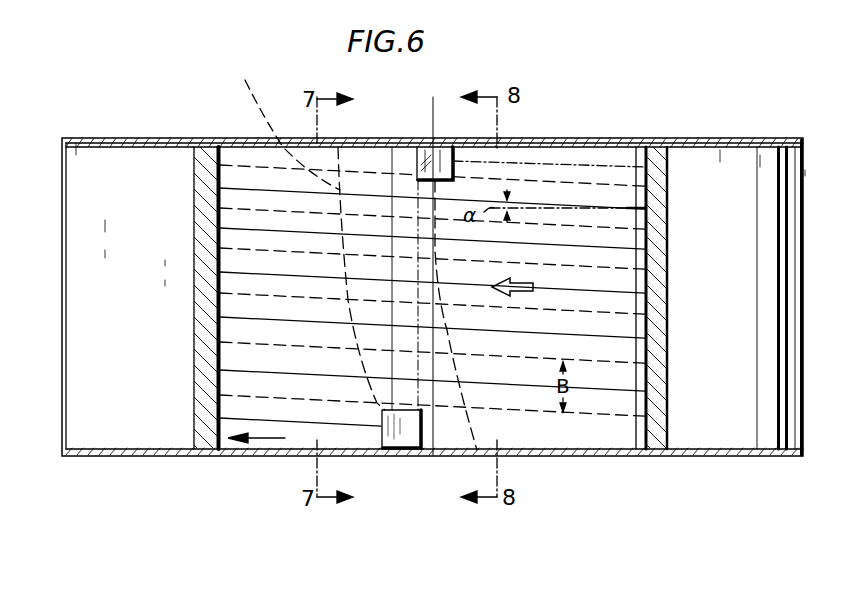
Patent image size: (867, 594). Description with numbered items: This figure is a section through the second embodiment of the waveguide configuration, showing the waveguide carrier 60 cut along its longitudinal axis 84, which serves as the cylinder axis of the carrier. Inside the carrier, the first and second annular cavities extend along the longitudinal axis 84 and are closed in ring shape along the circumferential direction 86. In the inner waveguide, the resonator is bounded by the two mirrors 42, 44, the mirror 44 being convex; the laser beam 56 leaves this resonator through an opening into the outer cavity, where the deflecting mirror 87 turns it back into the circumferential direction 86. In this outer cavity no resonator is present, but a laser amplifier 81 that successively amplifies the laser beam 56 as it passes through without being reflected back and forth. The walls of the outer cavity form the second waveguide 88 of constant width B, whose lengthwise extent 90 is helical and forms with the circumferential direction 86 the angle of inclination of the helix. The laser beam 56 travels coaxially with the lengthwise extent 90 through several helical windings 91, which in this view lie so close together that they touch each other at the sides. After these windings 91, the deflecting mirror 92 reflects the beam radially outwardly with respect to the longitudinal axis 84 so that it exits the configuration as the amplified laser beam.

The laser amplifier 81 is at (407, 120).
The mirror 44 is at (303, 232).
The deflecting mirror 92 is at (445, 148).
The laser beam 56 is at (538, 165).
The lengthwise extent 90 is at (572, 203).
The second waveguide 88 is at (613, 182).
The waveguide carrier 60 is at (714, 138).
The helical windings 91 is at (250, 287).
The circumferential direction 86 is at (265, 457).
The deflecting mirror 87 is at (406, 434).
The longitudinal axis 84 is at (433, 455).
The mirror 42 is at (465, 413).